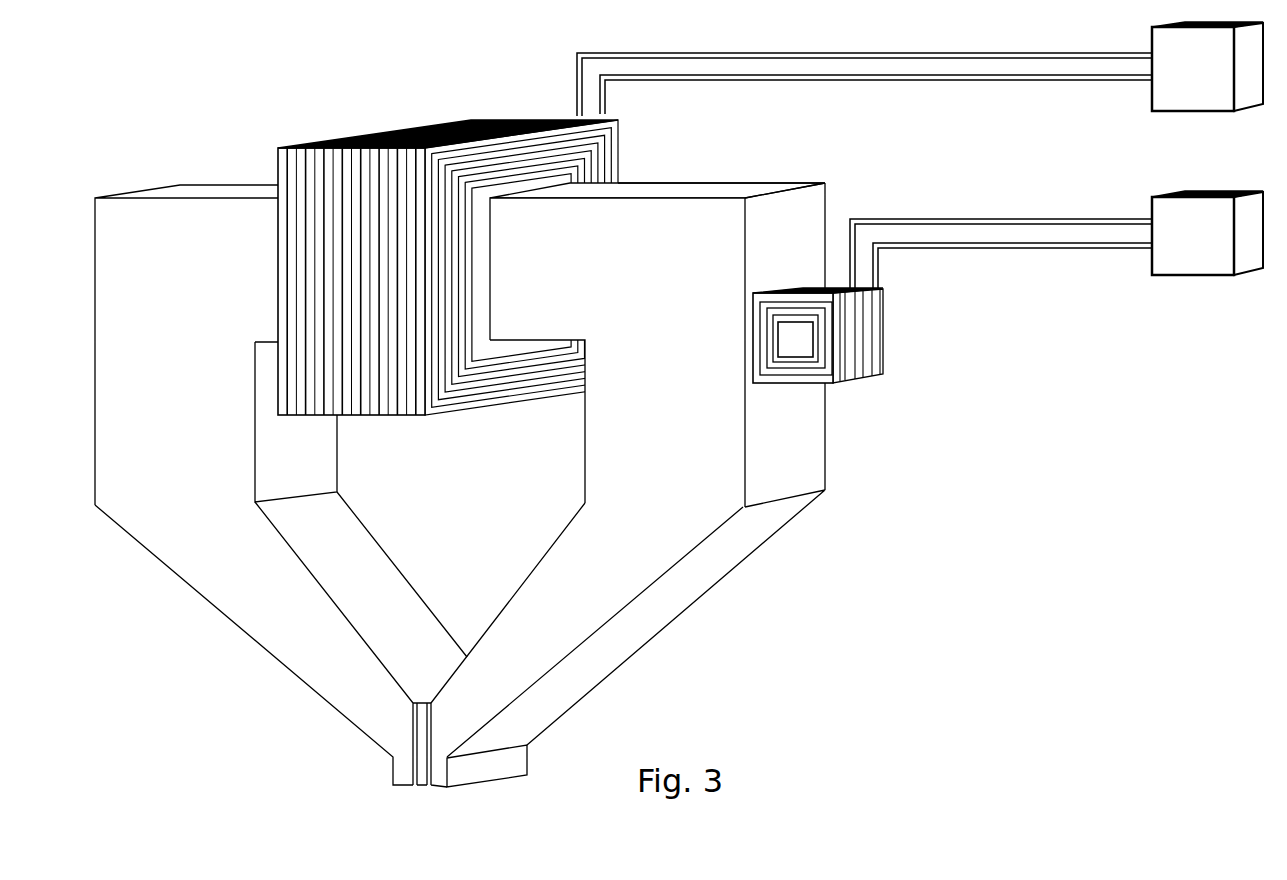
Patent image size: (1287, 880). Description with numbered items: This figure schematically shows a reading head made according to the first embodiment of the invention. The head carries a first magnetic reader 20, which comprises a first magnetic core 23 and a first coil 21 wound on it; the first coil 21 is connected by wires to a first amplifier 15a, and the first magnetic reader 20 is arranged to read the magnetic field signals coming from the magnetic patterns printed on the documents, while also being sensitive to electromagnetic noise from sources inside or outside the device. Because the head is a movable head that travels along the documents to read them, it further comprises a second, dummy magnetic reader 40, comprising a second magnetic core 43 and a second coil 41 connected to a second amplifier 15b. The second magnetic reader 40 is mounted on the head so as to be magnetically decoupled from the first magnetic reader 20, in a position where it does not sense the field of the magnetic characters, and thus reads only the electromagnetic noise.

The first magnetic reader 20 is at (852, 480).
The first coil 21 is at (386, 102).
The first magnetic core 23 is at (687, 528).
The second magnetic reader 40 is at (855, 270).
The second coil 41 is at (885, 369).
The second magnetic core 43 is at (794, 330).
The first amplifier 15a is at (1148, 100).
The second amplifier 15b is at (1148, 260).